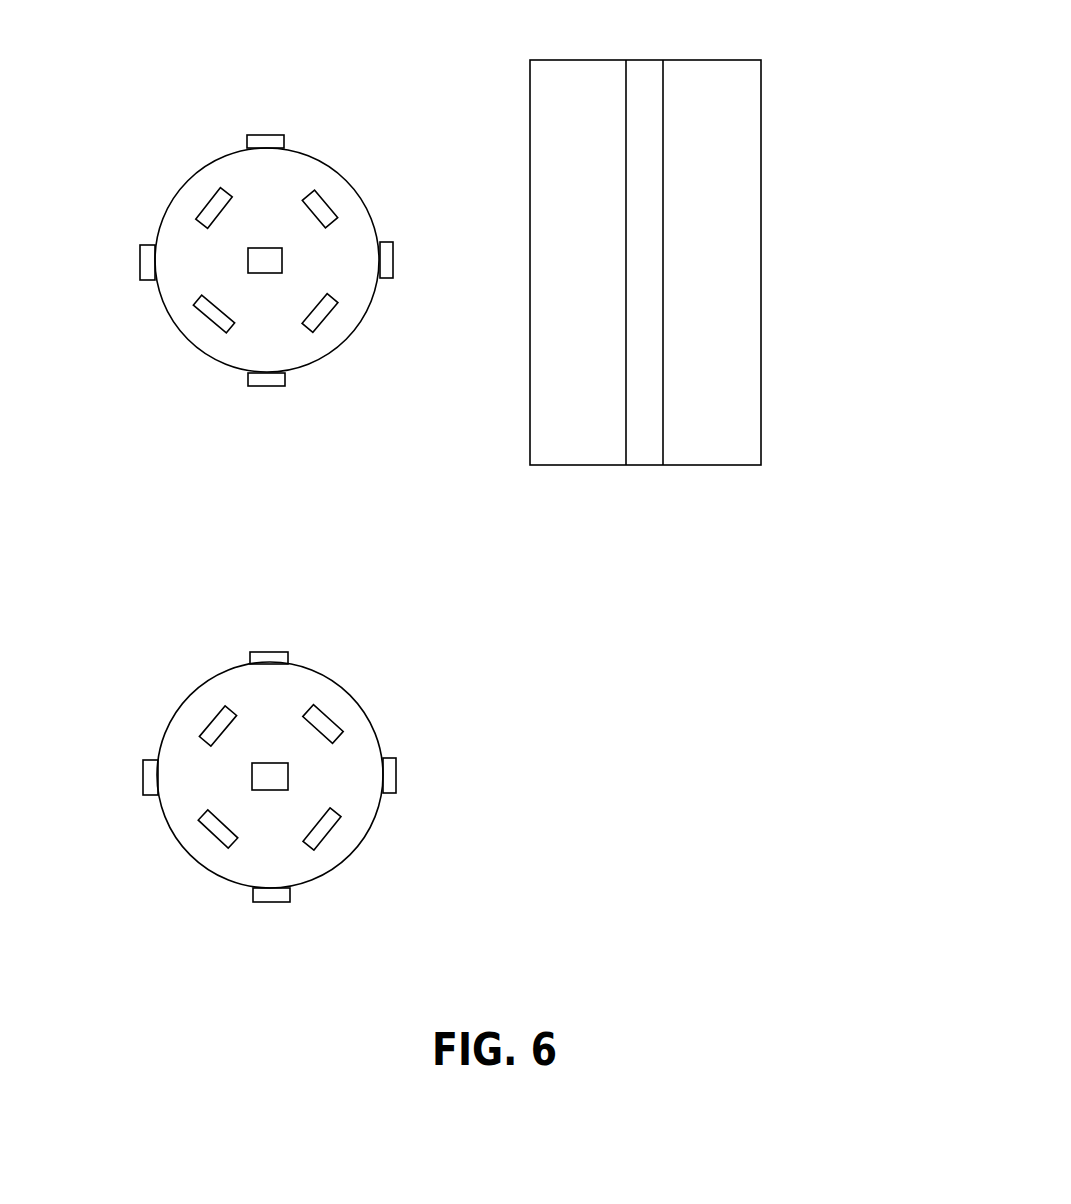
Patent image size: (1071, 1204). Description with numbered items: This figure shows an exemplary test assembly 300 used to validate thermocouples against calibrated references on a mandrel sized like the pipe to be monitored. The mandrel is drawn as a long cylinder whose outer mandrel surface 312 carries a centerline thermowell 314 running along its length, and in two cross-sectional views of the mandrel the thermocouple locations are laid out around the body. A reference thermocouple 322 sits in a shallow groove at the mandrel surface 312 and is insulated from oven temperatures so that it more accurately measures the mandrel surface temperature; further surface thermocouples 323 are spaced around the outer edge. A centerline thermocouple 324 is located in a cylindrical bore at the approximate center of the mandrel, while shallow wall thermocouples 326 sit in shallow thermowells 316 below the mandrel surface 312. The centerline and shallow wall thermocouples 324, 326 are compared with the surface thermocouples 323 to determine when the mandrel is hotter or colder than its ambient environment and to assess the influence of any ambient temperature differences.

The test assembly 300 is at (508, 733).
The mandrel surface 312 is at (760, 144).
The centerline thermowell 314 is at (641, 88).
The shallow thermowell 316 is at (212, 718).
The reference thermocouple 322 is at (265, 387).
The surface thermocouple 323 is at (263, 135).
The centerline thermocouple 324 is at (268, 252).
The shallow wall thermocouple 326 is at (205, 203).